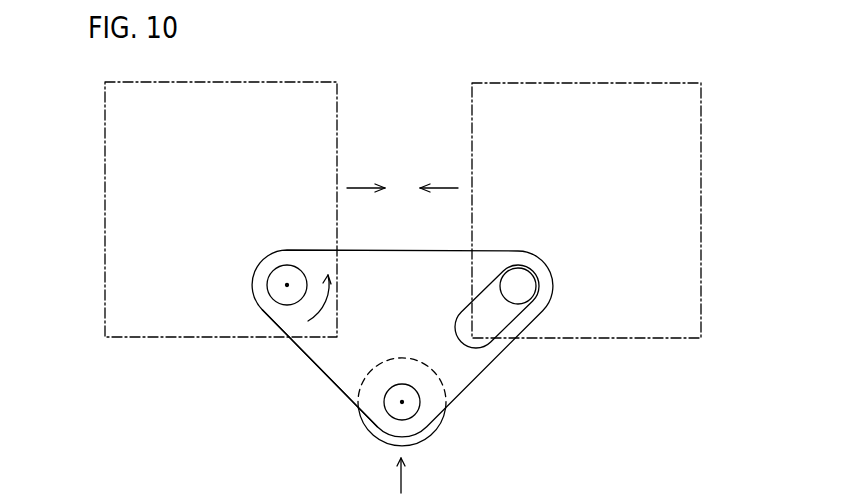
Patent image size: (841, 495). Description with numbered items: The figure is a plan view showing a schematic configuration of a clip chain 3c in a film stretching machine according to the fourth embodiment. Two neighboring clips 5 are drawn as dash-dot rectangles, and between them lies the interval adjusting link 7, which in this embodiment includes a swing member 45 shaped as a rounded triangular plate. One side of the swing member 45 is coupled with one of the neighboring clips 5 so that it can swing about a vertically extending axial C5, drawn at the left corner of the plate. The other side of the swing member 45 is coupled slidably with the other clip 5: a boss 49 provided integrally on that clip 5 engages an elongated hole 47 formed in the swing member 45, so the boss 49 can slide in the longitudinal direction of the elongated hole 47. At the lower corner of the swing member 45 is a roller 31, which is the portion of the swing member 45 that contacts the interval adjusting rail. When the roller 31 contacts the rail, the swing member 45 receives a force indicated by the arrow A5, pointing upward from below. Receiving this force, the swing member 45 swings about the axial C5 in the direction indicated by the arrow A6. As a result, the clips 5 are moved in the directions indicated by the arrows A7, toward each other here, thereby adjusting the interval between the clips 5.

The clip chain 3c is at (441, 59).
The clip 5 is at (104, 184).
The interval adjusting link 7 is at (337, 434).
The roller 31 is at (440, 424).
The swing member 45 is at (313, 364).
The elongated hole 47 is at (496, 318).
The boss 49 is at (536, 288).
The axial C5 is at (287, 283).
The arrow indicating force A5 is at (403, 480).
The arrow indicating swing direction A6 is at (331, 301).
The arrows indicating clip movement directions A7 is at (364, 187).